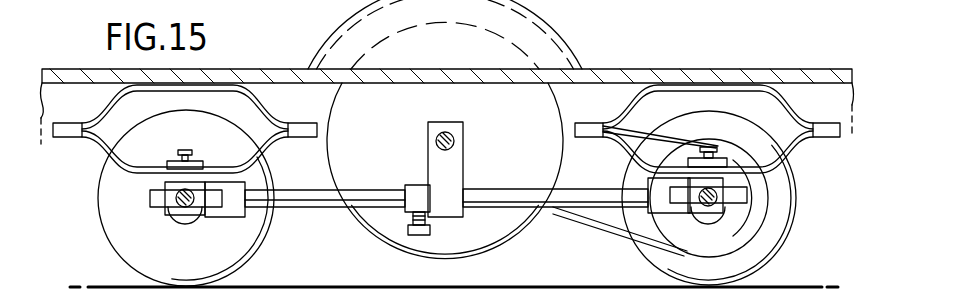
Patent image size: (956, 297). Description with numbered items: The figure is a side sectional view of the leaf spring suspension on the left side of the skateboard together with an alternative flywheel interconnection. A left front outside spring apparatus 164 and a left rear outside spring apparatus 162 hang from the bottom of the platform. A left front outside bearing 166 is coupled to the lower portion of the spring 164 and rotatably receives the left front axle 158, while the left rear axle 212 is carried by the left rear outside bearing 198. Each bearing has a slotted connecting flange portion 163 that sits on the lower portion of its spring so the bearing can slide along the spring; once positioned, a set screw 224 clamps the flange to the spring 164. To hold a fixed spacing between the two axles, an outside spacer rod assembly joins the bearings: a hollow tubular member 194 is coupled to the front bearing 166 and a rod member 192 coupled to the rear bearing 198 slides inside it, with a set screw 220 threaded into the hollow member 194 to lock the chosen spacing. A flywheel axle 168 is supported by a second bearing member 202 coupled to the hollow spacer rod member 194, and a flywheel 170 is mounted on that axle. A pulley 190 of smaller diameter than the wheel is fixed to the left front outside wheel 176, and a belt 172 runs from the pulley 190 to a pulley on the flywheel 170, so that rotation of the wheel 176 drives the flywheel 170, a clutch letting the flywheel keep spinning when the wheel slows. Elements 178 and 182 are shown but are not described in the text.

The left front axle 158 is at (796, 188).
The left rear outside spring apparatus 162 is at (82, 141).
The connecting flange portion 163 is at (168, 160).
The left front outside spring apparatus 164 is at (797, 137).
The left front outside bearing 166 is at (786, 217).
The flywheel axle 168 is at (455, 140).
The flywheel 170 is at (428, 246).
The belt 172 is at (588, 220).
The left front outside wheel 176 is at (762, 273).
The left wheel 178 is at (238, 265).
The drum sheave 182 is at (548, 24).
The pulley 190 is at (777, 250).
The rod member 192 is at (360, 220).
The hollow tubular member 194 is at (537, 210).
The left rear outside bearing 198 is at (175, 207).
The second bearing member 202 is at (463, 171).
The left rear axle 212 is at (177, 217).
The set screw 220 is at (431, 230).
The set screw 224 is at (720, 145).